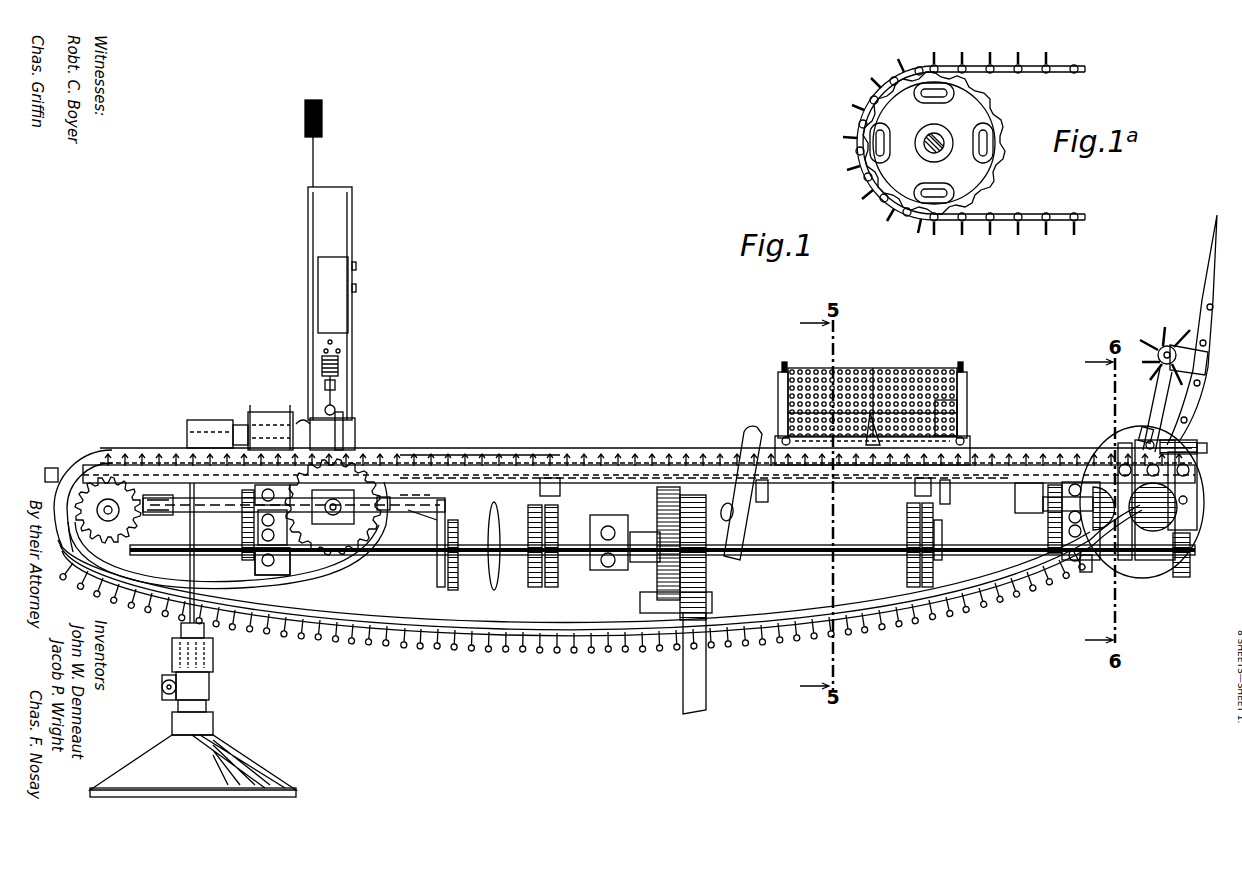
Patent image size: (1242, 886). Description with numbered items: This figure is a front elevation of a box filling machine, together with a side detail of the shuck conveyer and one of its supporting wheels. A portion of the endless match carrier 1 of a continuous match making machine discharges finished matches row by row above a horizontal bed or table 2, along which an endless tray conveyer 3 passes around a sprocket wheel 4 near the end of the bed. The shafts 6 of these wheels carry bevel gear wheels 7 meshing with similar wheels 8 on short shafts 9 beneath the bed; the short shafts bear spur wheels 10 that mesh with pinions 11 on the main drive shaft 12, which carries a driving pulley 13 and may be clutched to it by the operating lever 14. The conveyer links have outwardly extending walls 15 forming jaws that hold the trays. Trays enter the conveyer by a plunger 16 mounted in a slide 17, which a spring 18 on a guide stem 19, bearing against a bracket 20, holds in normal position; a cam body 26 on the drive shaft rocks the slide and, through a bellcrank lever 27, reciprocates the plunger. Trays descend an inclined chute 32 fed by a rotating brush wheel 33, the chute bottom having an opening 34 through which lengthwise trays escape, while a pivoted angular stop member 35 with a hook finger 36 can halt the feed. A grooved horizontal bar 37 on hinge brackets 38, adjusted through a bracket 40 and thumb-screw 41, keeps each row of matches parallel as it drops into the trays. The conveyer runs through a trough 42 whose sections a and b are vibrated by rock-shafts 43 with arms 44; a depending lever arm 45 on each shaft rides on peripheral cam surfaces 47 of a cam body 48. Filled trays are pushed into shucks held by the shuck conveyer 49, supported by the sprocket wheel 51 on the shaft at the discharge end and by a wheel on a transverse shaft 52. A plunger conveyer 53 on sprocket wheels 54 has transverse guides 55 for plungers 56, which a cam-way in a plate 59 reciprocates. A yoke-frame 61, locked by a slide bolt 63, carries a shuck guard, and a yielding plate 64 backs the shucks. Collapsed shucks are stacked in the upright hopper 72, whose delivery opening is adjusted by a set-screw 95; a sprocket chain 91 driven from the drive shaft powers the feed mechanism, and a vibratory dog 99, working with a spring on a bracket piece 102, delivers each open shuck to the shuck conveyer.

In FIG. 1, the endless match carrier 1 is at (908, 368).
In FIG. 1, the horizontal bed or table 2 is at (1010, 470).
In FIG. 1, the endless tray conveyer 3 is at (600, 455).
In FIG. 1, the sprocket wheel 4 is at (1108, 565).
In FIG. 1, the shaft 6 is at (104, 506).
In FIG. 1A, the shaft 6 is at (930, 137).
In FIG. 1, the bevel gear wheel 7 is at (96, 530).
In FIG. 1, the bevel gear wheel 8 is at (158, 516).
In FIG. 1, the short shaft 9 is at (212, 512).
In FIG. 1, the spur wheel 10 is at (242, 530).
In FIG. 1, the pinion 11 is at (255, 565).
In FIG. 1, the main drive shaft 12 is at (825, 556).
In FIG. 1, the driving pulley 13 is at (706, 570).
In FIG. 1, the operating lever 14 is at (745, 432).
In FIG. 1, the outwardly extending walls 15 is at (534, 651).
In FIG. 1, the plunger 16 is at (1110, 448).
In FIG. 1, the slide 17 is at (1124, 443).
In FIG. 1, the spring 18 is at (1185, 442).
In FIG. 1, the guide stem 19 is at (1189, 471).
In FIG. 1, the bracket 20 is at (1152, 442).
In FIG. 1, the cam body 26 is at (1182, 578).
In FIG. 1, the bellcrank lever 27 is at (1128, 452).
In FIG. 1, the inclined chute 32 is at (1213, 250).
In FIG. 1, the rotating brush wheel 33 is at (1157, 345).
In FIG. 1, the opening 34 is at (1207, 312).
In FIG. 1, the angular stop member 35 is at (1147, 428).
In FIG. 1, the hook finger 36 is at (1158, 400).
In FIG. 1, the horizontal bar 37 is at (955, 435).
In FIG. 1, the hinge brackets 38 is at (782, 440).
In FIG. 1, the bracket 40 is at (896, 450).
In FIG. 1, the thumb-screw 41 is at (880, 445).
In FIG. 1, the trough 42 is at (458, 450).
In FIG. 1, the rock-shafts 43 is at (490, 480).
In FIG. 1, the arms 44 is at (762, 502).
In FIG. 1, the depending lever arm 45 is at (548, 493).
In FIG. 1, the peripheral cam surfaces 47 is at (555, 580).
In FIG. 1, the cam body 48 is at (935, 570).
In FIG. 1, the shuck conveyer 49 is at (165, 597).
In FIG. 1A, the shuck conveyer 49 is at (1000, 222).
In FIG. 1A, the sprocket wheel 51 is at (982, 116).
In FIG. 1, the transverse shaft 52 is at (333, 516).
In FIG. 1, the plunger conveyer 53 is at (330, 578).
In FIG. 1, the sprocket wheels 54 is at (46, 474).
In FIG. 1, the transverse guides 55 is at (252, 614).
In FIG. 1, the plungers 56 is at (290, 620).
In FIG. 1, the plate 59 is at (150, 450).
In FIG. 1, the yoke-frame 61 is at (258, 412).
In FIG. 1, the slide bolt 63 is at (343, 424).
In FIG. 1, the plate 64 is at (210, 420).
In FIG. 1, the upright hopper 72 is at (340, 318).
In FIG. 1, the sprocket chain 91 is at (440, 570).
In FIG. 1, the set-screw 95 is at (340, 362).
In FIG. 1, the vibratory dog 99 is at (355, 432).
In FIG. 1, the bracket piece 102 is at (335, 408).
In FIG. 1, the trough section a is at (770, 452).
In FIG. 1, the trough section b is at (575, 446).